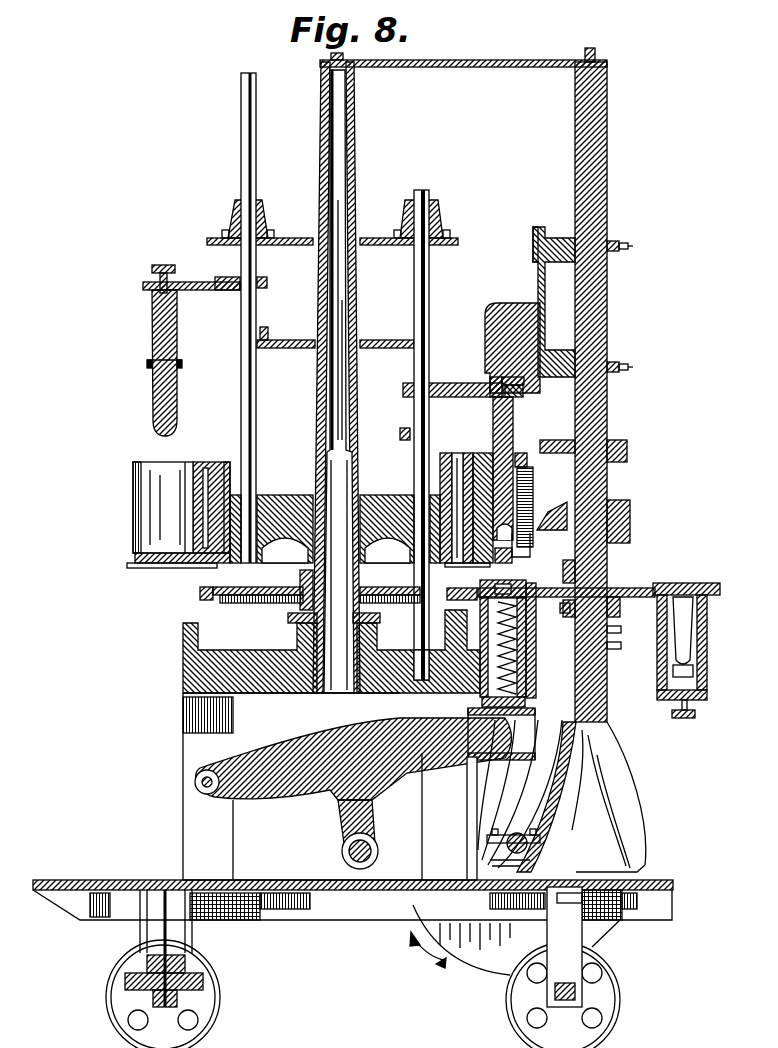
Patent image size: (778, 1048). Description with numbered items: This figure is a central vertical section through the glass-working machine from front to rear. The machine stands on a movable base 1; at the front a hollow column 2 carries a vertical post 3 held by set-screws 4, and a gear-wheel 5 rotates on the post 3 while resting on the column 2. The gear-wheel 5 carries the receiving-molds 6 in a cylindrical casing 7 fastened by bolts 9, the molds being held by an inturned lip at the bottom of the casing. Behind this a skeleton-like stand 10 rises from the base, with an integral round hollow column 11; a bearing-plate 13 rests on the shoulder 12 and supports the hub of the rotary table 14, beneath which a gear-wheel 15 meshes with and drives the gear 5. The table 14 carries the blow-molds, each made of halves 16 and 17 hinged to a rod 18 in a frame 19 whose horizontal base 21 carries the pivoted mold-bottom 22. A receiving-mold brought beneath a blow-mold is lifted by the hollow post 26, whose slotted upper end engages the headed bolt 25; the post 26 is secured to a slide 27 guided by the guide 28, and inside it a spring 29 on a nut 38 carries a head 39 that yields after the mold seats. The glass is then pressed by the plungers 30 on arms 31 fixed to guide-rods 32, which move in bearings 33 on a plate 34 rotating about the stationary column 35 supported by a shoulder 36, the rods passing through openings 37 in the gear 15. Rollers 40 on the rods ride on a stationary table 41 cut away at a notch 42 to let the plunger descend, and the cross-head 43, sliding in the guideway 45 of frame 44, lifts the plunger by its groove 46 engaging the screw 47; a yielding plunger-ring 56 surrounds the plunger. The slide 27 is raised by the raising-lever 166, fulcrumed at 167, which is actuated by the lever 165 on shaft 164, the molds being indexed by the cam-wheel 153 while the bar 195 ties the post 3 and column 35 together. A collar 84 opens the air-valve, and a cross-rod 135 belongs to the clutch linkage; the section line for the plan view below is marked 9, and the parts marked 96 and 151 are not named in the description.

The movable base 1 is at (298, 916).
The hollow column 2 is at (647, 832).
The vertical post 3 is at (607, 394).
The set-screws 4 is at (621, 646).
The gear-wheel 5 is at (641, 590).
The receiving-molds 6 is at (708, 648).
The cylindrical casing 7 is at (527, 650).
The bolts 9 is at (133, 582).
The stand 10 is at (192, 842).
The round hollow column 11 is at (356, 479).
The shoulder 12 is at (300, 639).
The bearing-plate 13 is at (380, 618).
The rotary table 14 is at (293, 497).
The gear-wheel 15 is at (200, 590).
The mold half 16 is at (528, 465).
The mold half 17 is at (133, 498).
The rod 18 is at (460, 460).
The frame 19 is at (228, 465).
The horizontal base 21 is at (172, 568).
The mold-bottom 22 is at (137, 558).
The headed bolt 25 is at (695, 717).
The hollow post 26 is at (520, 672).
The slide 27 is at (536, 715).
The guide 28 is at (466, 803).
The spring 29 is at (494, 605).
The plungers 30 is at (513, 429).
The arms 31 is at (456, 398).
The guide-rods 32 is at (258, 150).
The bearings 33 is at (230, 216).
The plate 34 is at (386, 238).
The stationary column 35 is at (362, 288).
The shoulder 36 is at (314, 240).
The openings 37 is at (278, 575).
The nut 38 is at (527, 702).
The head 39 is at (536, 618).
The rollers 40 is at (268, 333).
The stationary table 41 is at (290, 350).
The notch 42 is at (406, 340).
The cross-head 43 is at (513, 303).
The frame 44 is at (539, 240).
The guideway 45 is at (533, 246).
The groove 46 is at (492, 381).
The screw 47 is at (523, 392).
The plunger-ring 56 is at (150, 346).
The collar 84 is at (631, 520).
The block 96 is at (530, 556).
The cross-rod 135 is at (571, 772).
The roller 151 is at (520, 833).
The cam-wheel 153 is at (476, 960).
The shaft 164 is at (348, 852).
The lever 165 is at (339, 805).
The raising-lever 166 is at (278, 800).
The fulcrum 167 is at (195, 781).
The bar 195 is at (471, 63).